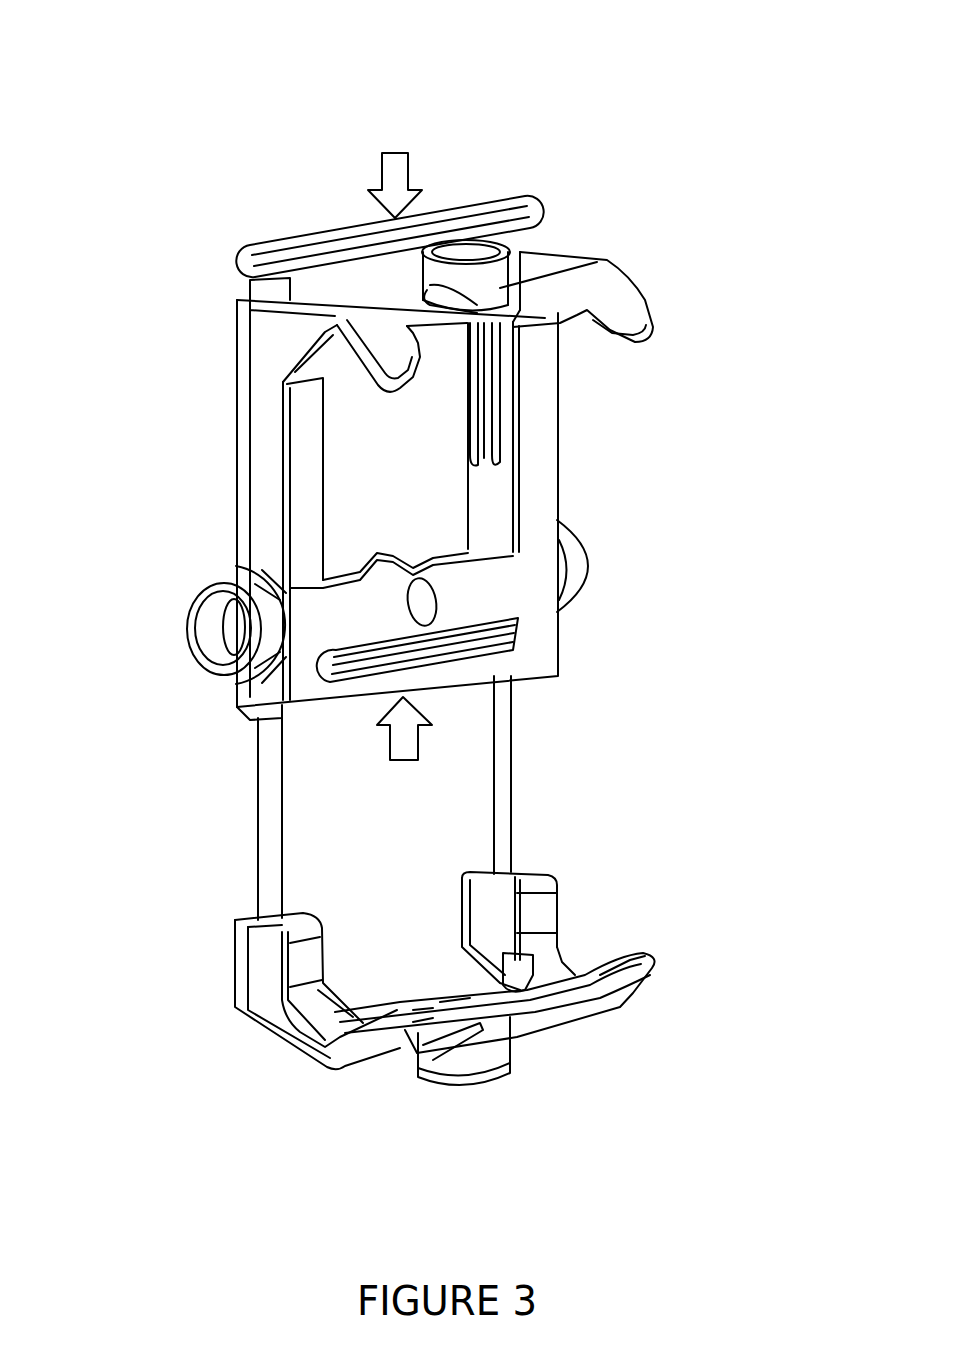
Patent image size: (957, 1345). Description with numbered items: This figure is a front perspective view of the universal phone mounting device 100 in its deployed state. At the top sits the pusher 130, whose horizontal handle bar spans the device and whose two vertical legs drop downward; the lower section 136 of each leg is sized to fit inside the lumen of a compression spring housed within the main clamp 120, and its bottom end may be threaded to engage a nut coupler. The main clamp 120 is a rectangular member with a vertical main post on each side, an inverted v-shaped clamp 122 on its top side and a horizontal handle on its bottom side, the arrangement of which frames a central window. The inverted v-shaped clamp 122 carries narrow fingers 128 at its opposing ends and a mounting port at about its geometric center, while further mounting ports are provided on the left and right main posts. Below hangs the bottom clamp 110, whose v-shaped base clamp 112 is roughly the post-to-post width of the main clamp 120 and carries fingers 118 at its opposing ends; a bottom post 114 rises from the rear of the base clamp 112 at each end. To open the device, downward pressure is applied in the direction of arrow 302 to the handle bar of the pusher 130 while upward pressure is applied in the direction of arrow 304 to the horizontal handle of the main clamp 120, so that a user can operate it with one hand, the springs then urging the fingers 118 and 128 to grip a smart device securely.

The universal phone mounting device 100 is at (780, 78).
The bottom clamp 110 is at (568, 962).
The v-shaped base clamp 112 is at (400, 1052).
The bottom post 114 is at (557, 887).
The fingers 118 is at (630, 1000).
The main clamp 120 is at (273, 482).
The inverted v-shaped clamp 122 is at (597, 260).
The fingers 128 is at (638, 325).
The pusher 130 is at (356, 232).
The lower section 136 is at (510, 778).
The arrow 302 is at (395, 167).
The arrow 304 is at (404, 750).